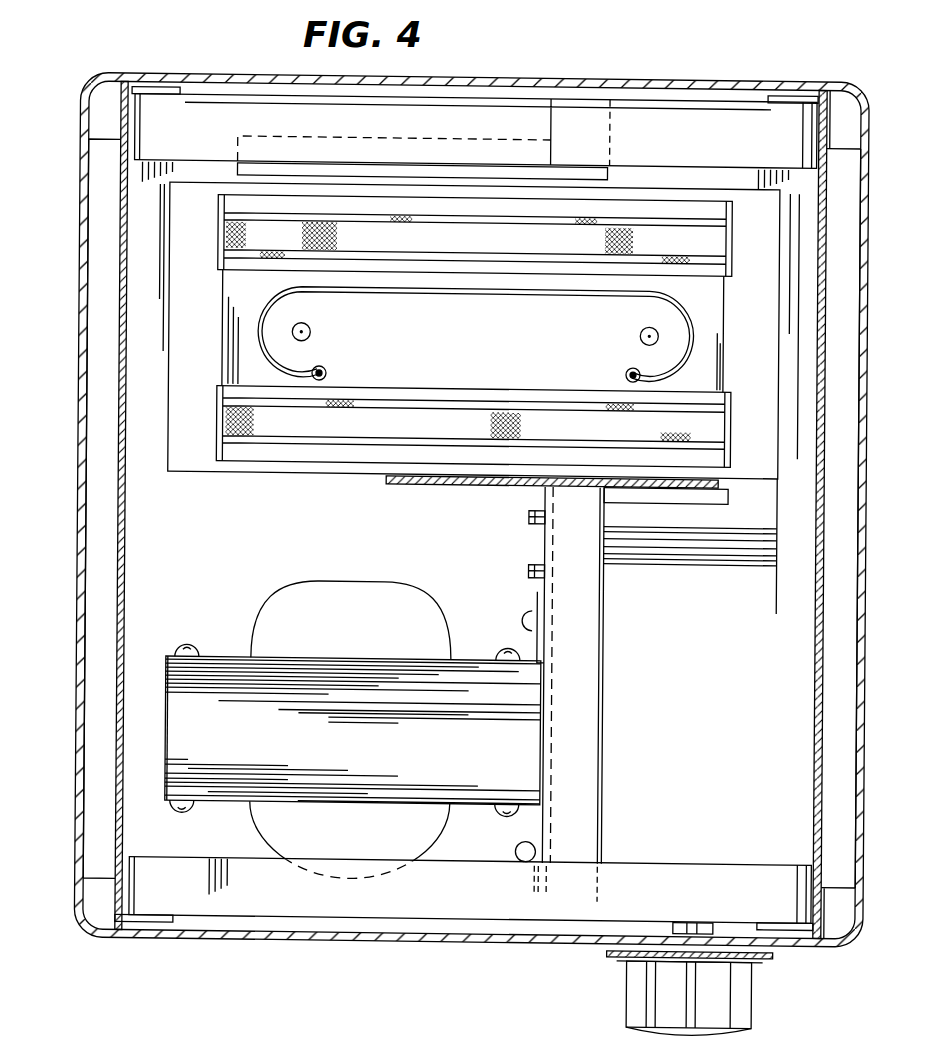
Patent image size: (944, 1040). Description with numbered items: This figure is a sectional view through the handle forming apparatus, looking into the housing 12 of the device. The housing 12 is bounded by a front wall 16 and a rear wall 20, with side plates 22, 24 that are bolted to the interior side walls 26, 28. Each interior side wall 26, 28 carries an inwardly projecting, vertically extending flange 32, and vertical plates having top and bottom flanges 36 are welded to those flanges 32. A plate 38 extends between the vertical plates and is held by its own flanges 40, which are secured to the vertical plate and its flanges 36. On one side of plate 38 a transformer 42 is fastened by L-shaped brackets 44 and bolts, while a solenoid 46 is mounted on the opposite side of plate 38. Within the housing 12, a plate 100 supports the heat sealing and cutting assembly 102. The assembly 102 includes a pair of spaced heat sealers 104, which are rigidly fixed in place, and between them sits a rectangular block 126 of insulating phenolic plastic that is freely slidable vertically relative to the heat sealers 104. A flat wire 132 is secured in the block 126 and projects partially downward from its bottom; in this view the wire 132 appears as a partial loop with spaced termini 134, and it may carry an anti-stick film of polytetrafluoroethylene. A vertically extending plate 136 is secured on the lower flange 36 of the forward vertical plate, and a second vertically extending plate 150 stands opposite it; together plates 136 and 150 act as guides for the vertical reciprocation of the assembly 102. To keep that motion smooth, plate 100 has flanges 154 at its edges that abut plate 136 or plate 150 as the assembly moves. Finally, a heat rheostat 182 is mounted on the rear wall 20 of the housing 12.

The housing 12 is at (344, 957).
The front wall 16 is at (575, 99).
The rear wall 20 is at (483, 940).
The side plate 22 is at (79, 353).
The side plate 24 is at (861, 340).
The interior side wall 26 is at (133, 560).
The interior side wall 28 is at (816, 621).
The flange 32 is at (172, 92).
The top and bottom flange 36 is at (791, 151).
The plate 38 is at (545, 539).
The flange 40 is at (606, 718).
The transformer 42 is at (361, 641).
The L-shaped bracket 44 is at (233, 658).
The solenoid 46 is at (656, 561).
The plate 100 is at (210, 474).
The heat sealing and cutting assembly 102 is at (221, 330).
The heat sealer 104 is at (663, 247).
The block 126 is at (491, 377).
The flat wire 132 is at (350, 291).
The termini 134 is at (322, 375).
The plate 136 is at (349, 165).
The plate 150 is at (468, 486).
The flange 154 is at (859, 1037).
The heat rheostat 182 is at (757, 1007).